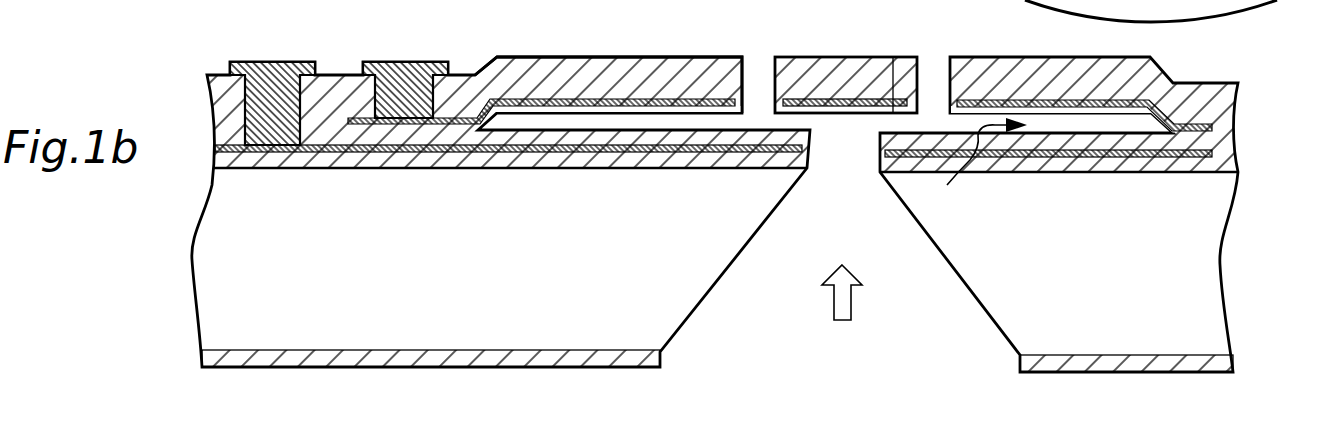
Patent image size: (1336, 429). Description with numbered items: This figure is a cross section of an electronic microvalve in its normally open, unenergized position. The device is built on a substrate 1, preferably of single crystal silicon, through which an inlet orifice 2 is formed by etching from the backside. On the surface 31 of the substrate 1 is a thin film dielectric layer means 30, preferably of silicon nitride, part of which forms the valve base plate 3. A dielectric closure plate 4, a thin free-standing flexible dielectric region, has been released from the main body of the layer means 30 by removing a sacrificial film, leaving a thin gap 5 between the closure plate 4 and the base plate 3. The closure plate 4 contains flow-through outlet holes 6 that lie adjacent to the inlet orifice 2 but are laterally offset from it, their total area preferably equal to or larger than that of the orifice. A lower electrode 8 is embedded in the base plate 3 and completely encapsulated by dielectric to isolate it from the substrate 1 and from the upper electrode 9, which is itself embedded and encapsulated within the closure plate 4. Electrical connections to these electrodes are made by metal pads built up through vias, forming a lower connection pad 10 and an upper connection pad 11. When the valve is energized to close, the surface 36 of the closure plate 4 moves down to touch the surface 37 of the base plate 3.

The substrate 1 is at (192, 268).
The inlet orifice 2 is at (847, 158).
The valve base plate 3 is at (799, 128).
The dielectric closure plate 4 is at (681, 57).
The thin gap 5 is at (974, 162).
The flow-through outlet holes 6 is at (757, 64).
The lower electrode 8 is at (652, 148).
The upper electrode 9 is at (520, 97).
The lower connection pad 10 is at (270, 62).
The upper connection pad 11 is at (376, 62).
The thin film dielectric layer means 30 is at (1243, 182).
The surface of the silicon substrate 31 is at (1152, 172).
The surface of closure plate 36 is at (845, 99).
The surface of base plate 37 is at (893, 165).